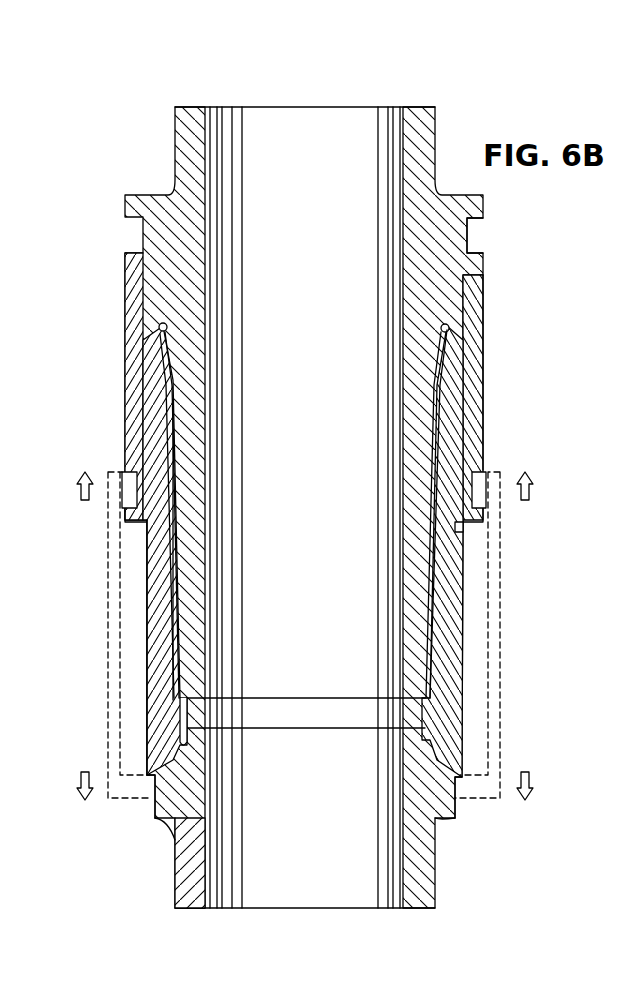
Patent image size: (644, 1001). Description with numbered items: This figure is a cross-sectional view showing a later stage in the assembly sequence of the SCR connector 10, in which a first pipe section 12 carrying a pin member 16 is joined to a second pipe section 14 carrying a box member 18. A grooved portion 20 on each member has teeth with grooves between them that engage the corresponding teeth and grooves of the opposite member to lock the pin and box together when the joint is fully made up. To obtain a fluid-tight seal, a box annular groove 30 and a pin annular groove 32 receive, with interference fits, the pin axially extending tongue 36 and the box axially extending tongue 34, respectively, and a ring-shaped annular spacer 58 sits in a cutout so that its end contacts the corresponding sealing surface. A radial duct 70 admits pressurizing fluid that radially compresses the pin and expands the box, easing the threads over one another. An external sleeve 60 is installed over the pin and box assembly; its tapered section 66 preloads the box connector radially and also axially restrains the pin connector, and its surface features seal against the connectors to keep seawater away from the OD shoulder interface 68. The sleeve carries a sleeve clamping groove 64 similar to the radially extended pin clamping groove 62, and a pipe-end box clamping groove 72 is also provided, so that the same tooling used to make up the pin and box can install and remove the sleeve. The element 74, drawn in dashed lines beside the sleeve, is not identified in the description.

The SCR connector 10 is at (132, 149).
The first pipe section 12 is at (185, 167).
The second pipe section 14 is at (185, 872).
The pin member 16 is at (128, 463).
The box member 18 is at (185, 540).
The grooved portion 20 is at (175, 568).
The box annular groove 30 is at (182, 742).
The pin annular groove 32 is at (157, 326).
The box axially extending tongue 34 is at (160, 356).
The pin axially extending tongue 36 is at (185, 716).
The annular spacer 58 is at (400, 713).
The external sleeve 60 is at (484, 372).
The radially extended pin clamping groove 62 is at (482, 247).
The sleeve clamping groove 64 is at (482, 490).
The tapered section 66 is at (470, 423).
The OD shoulder interface 68 is at (466, 352).
The radial duct 70 is at (456, 546).
The pipe-end box clamping groove 72 is at (458, 798).
The actuation tool 74 is at (500, 626).